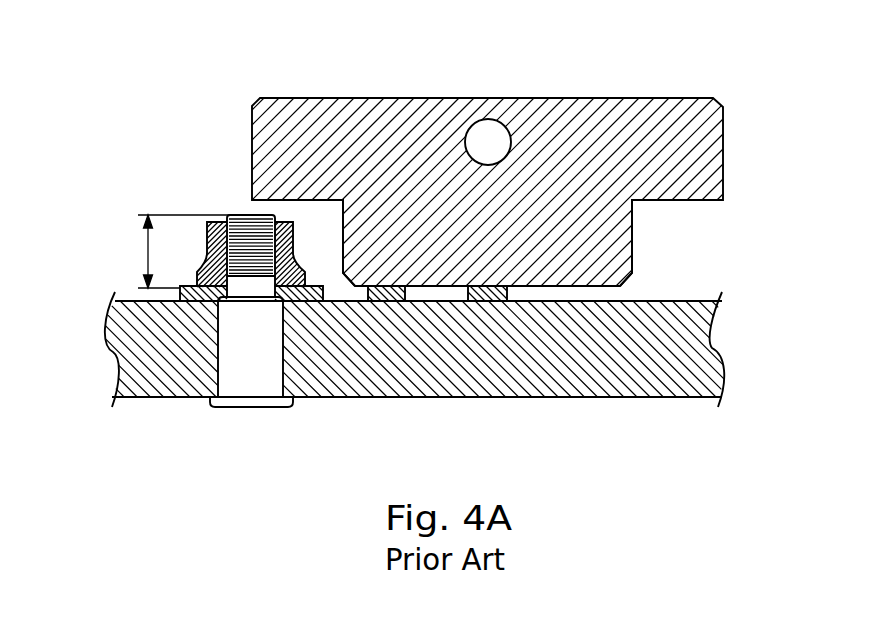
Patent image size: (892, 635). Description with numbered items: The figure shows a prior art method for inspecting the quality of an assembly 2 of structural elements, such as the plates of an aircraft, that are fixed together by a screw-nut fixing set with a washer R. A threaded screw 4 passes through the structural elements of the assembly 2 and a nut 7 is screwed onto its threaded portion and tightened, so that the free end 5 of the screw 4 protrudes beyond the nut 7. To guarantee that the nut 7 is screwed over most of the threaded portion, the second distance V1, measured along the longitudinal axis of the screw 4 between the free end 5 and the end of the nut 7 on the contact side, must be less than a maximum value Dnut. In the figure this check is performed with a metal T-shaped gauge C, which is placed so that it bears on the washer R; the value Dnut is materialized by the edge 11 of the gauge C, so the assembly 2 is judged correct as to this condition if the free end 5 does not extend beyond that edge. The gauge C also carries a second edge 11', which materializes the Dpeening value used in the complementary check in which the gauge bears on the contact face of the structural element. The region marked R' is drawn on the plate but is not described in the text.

The gauge C is at (573, 108).
The edge of the gauge 11 is at (309, 150).
The edge of the gauge 11' is at (681, 143).
The assembly 2 is at (709, 334).
The threaded screw 4 is at (233, 408).
The free end 5 is at (235, 214).
The nut 7 is at (213, 232).
The washer R is at (236, 367).
The spacer pad R' is at (523, 367).
The second distance V1 is at (165, 251).